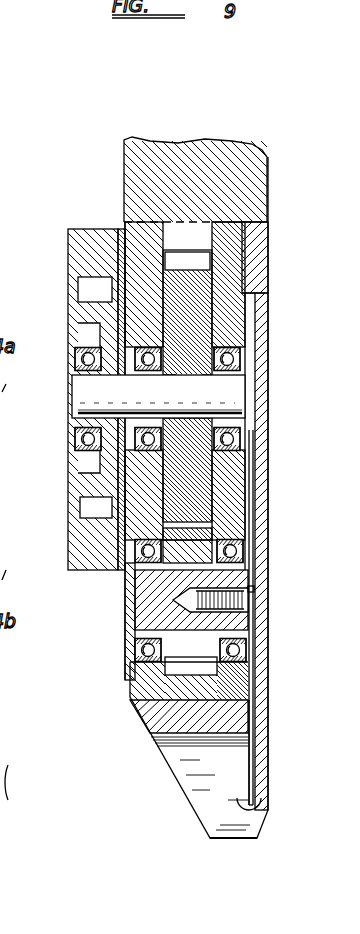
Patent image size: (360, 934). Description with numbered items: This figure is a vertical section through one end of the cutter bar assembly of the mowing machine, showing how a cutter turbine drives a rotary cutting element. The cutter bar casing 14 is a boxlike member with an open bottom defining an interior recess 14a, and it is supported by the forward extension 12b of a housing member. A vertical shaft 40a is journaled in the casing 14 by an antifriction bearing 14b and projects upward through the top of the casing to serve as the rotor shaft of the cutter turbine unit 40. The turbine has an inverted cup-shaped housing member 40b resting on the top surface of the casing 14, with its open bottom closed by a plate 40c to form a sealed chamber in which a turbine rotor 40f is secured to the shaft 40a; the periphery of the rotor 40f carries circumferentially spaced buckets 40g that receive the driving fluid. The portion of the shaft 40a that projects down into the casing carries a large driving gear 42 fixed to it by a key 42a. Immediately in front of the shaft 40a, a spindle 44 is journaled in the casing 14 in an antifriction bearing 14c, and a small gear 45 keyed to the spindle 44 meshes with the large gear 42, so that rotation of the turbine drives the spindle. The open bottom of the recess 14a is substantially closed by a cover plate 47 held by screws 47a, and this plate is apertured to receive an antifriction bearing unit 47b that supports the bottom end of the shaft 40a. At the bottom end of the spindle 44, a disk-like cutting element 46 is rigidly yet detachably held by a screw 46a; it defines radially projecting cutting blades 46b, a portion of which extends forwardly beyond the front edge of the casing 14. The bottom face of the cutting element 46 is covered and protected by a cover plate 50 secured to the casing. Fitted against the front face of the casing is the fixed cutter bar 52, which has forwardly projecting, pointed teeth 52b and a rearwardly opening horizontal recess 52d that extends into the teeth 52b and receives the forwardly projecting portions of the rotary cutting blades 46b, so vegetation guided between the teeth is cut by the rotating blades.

The forward extension 12b is at (124, 168).
The large driving gear 42 is at (240, 319).
The key 42a is at (205, 413).
The cutter turbine unit 40 is at (62, 367).
The vertical shaft 40a is at (88, 398).
The cup-shaped housing member 40b is at (83, 242).
The plate 40c is at (128, 570).
The turbine rotor 40f is at (108, 468).
The buckets 40g is at (93, 507).
The cutter bar casing 14 is at (133, 248).
The interior recess 14a is at (160, 238).
The antifriction bearing 14b is at (146, 348).
The antifriction bearing 14c is at (178, 666).
The cover plate 47 is at (227, 487).
The screws 47a is at (274, 240).
The antifriction bearing unit 47b is at (243, 441).
The cutting element 46 is at (255, 650).
The screw 46a is at (258, 588).
The cutting blades 46b is at (254, 731).
The cover plate 50 is at (257, 627).
The spindle 44 is at (150, 652).
The small gear 45 is at (157, 700).
The fixed cutter bar 52 is at (217, 530).
The teeth 52b is at (233, 840).
The horizontal recess 52d is at (242, 820).